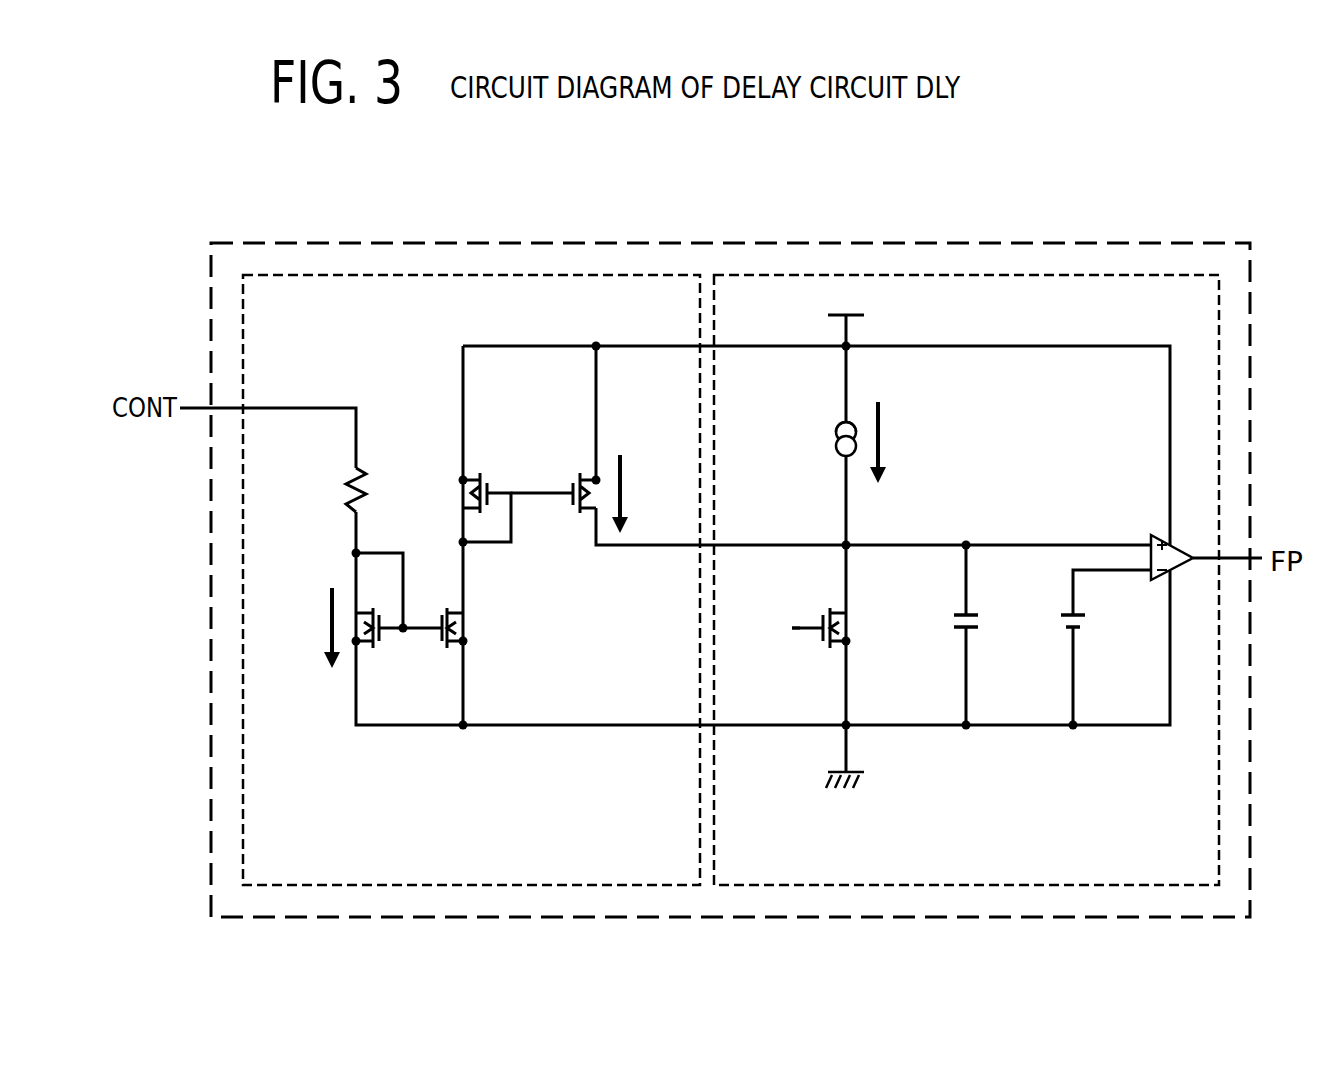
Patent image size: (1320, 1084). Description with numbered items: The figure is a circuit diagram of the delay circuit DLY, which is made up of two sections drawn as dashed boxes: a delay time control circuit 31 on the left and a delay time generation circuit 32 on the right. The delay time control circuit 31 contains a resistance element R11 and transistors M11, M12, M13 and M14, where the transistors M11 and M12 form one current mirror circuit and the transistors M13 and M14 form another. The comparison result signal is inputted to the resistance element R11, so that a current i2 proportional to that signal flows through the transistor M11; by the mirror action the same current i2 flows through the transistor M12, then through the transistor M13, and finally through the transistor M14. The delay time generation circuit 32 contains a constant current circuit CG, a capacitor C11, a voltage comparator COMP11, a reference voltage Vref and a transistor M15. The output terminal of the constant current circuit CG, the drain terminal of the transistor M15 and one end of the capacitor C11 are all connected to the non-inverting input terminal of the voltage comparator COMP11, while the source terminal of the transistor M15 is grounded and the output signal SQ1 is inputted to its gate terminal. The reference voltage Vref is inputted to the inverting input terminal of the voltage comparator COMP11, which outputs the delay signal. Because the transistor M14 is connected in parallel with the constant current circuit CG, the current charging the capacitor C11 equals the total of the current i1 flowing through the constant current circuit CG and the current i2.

The delay time control circuit 31 is at (431, 274).
The delay time generation circuit 32 is at (977, 274).
The delay circuit DLY is at (716, 243).
The resistance element R11 is at (329, 490).
The transistor M11 is at (399, 644).
The transistor M12 is at (481, 628).
The transistor M13 is at (490, 492).
The transistor M14 is at (553, 510).
The transistor M15 is at (847, 628).
The constant current circuit CG is at (821, 439).
The capacitor C11 is at (989, 624).
The reference voltage Vref is at (1101, 618).
The voltage comparator COMP11 is at (1125, 540).
The output signal SQ1 is at (767, 630).
The current i1 is at (887, 442).
The current i2 is at (476, 561).